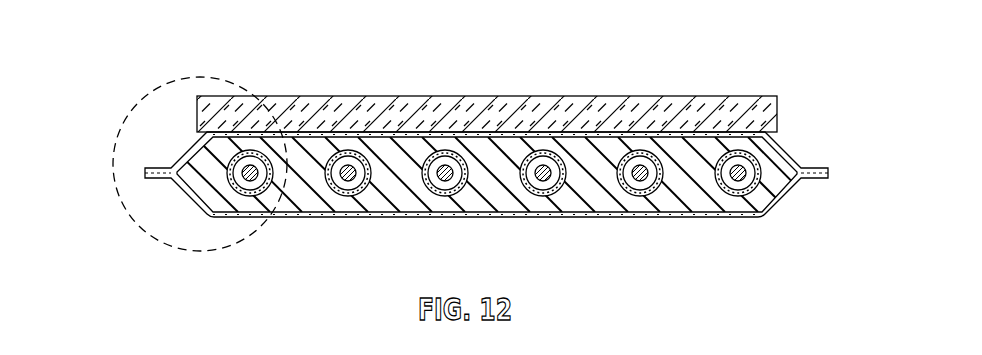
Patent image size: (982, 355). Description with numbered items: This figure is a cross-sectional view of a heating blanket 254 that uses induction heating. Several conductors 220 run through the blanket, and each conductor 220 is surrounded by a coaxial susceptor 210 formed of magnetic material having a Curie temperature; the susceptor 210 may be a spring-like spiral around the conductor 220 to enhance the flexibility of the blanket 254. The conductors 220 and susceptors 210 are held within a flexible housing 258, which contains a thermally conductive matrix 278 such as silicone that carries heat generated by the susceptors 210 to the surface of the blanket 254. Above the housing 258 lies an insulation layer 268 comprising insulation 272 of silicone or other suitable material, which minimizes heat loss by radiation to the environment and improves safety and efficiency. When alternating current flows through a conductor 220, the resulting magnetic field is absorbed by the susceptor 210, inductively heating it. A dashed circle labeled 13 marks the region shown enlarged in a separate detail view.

The detail view reference (FIG. 13) 13 is at (143, 228).
The coaxial susceptor 210 is at (251, 156).
The conductor 220 is at (445, 170).
The heating blanket 254 is at (770, 53).
The housing 258 is at (768, 217).
The insulation layer 268 is at (448, 110).
The insulation 272 is at (482, 113).
The thermally conductive matrix 278 is at (770, 190).